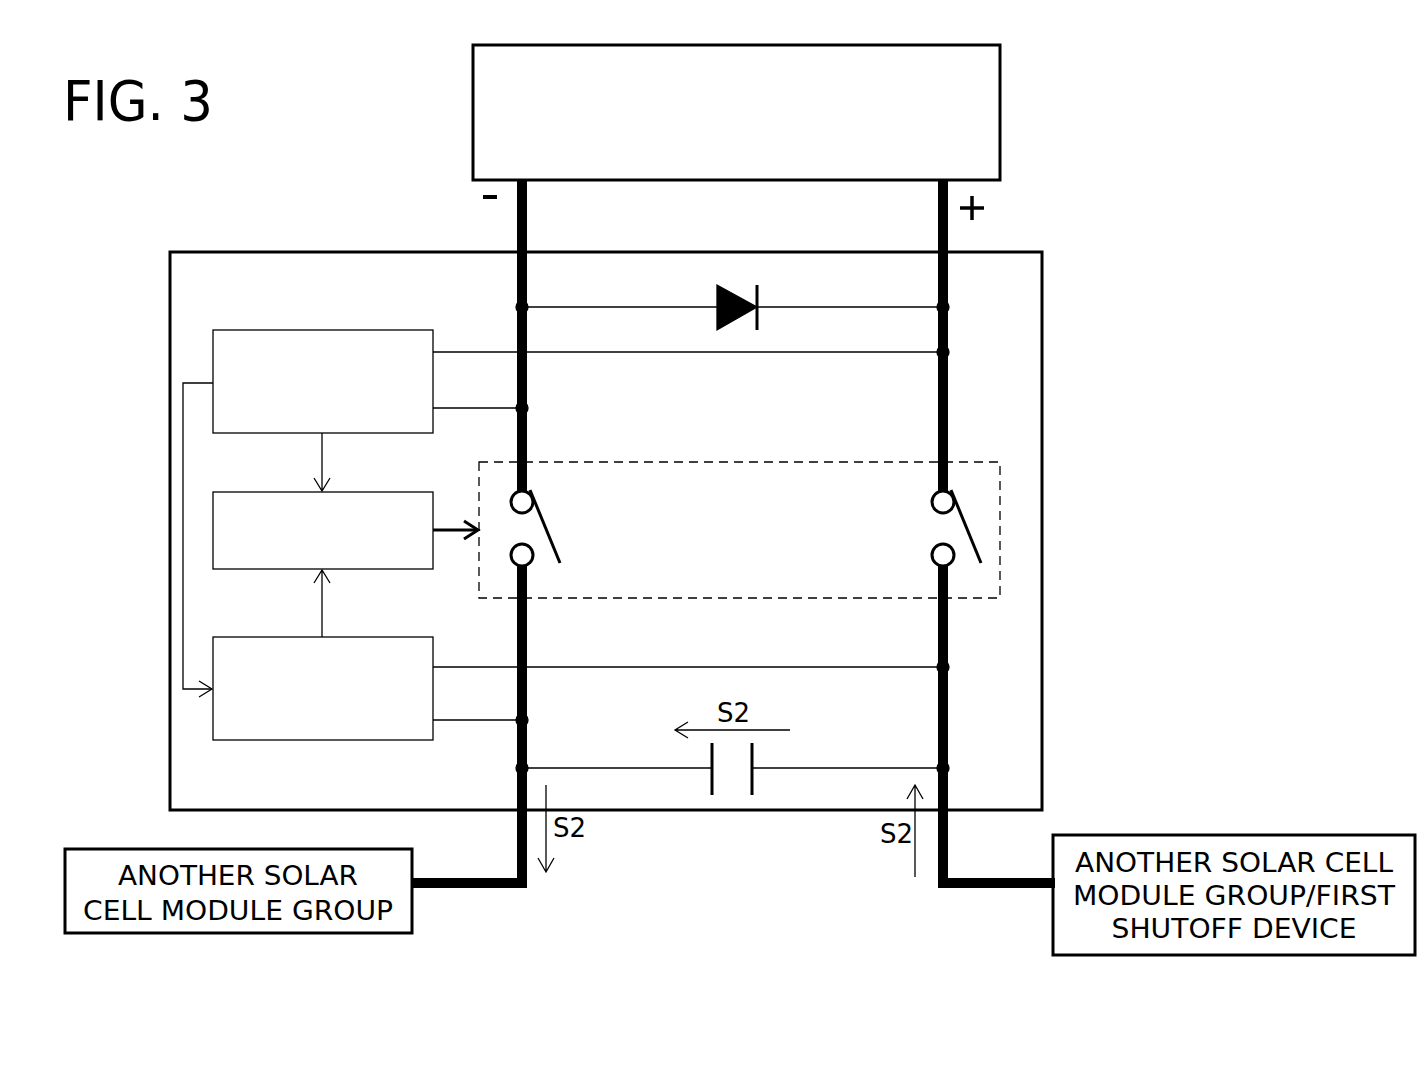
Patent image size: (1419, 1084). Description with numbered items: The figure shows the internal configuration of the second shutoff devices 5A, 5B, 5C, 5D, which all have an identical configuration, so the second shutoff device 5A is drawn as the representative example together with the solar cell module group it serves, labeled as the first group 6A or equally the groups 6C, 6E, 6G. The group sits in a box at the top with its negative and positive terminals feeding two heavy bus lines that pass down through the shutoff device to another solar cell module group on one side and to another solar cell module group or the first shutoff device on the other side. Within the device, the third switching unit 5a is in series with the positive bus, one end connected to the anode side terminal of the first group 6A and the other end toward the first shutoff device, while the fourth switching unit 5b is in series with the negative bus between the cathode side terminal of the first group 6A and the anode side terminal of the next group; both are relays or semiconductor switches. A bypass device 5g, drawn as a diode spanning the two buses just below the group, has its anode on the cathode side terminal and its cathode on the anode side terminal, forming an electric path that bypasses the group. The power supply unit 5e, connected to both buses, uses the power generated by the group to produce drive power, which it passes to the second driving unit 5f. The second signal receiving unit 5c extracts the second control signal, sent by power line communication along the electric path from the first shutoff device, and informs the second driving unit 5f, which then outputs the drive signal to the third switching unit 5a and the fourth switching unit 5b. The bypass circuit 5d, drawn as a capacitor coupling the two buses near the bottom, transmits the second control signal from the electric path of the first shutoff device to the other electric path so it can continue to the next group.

The first group 6A is at (855, 112).
The solar cell module group 6C is at (855, 112).
The solar cell module group 6E is at (855, 112).
The solar cell module group 6G is at (982, 115).
The second shutoff device 5A is at (729, 519).
The second shutoff device 5B is at (729, 519).
The second shutoff device 5C is at (729, 519).
The second shutoff device 5D is at (1115, 295).
The third switching unit 5a is at (988, 528).
The fourth switching unit 5b is at (558, 528).
The second signal receiving unit 5c is at (213, 720).
The bypass circuit 5d is at (764, 789).
The power supply unit 5e is at (213, 355).
The second driving unit 5f is at (213, 530).
The bypass device 5g is at (735, 295).